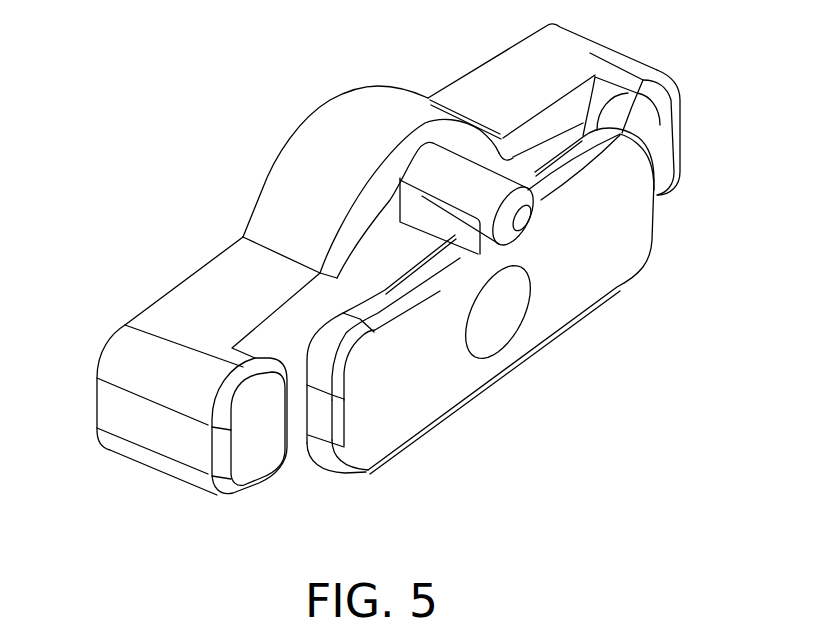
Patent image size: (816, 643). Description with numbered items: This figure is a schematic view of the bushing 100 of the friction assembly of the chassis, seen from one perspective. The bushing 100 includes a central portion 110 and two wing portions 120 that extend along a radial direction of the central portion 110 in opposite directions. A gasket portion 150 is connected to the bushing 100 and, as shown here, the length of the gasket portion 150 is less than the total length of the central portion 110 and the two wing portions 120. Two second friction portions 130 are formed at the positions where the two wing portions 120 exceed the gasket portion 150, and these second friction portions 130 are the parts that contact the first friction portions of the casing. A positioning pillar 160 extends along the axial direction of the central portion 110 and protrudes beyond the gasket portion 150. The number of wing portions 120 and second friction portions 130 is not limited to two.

The bushing 100 is at (123, 155).
The central portion 110 is at (315, 158).
The wing portion 120 is at (190, 303).
The second friction portion 130 is at (260, 453).
The gasket portion 150 is at (580, 287).
The positioning pillar 160 is at (470, 193).